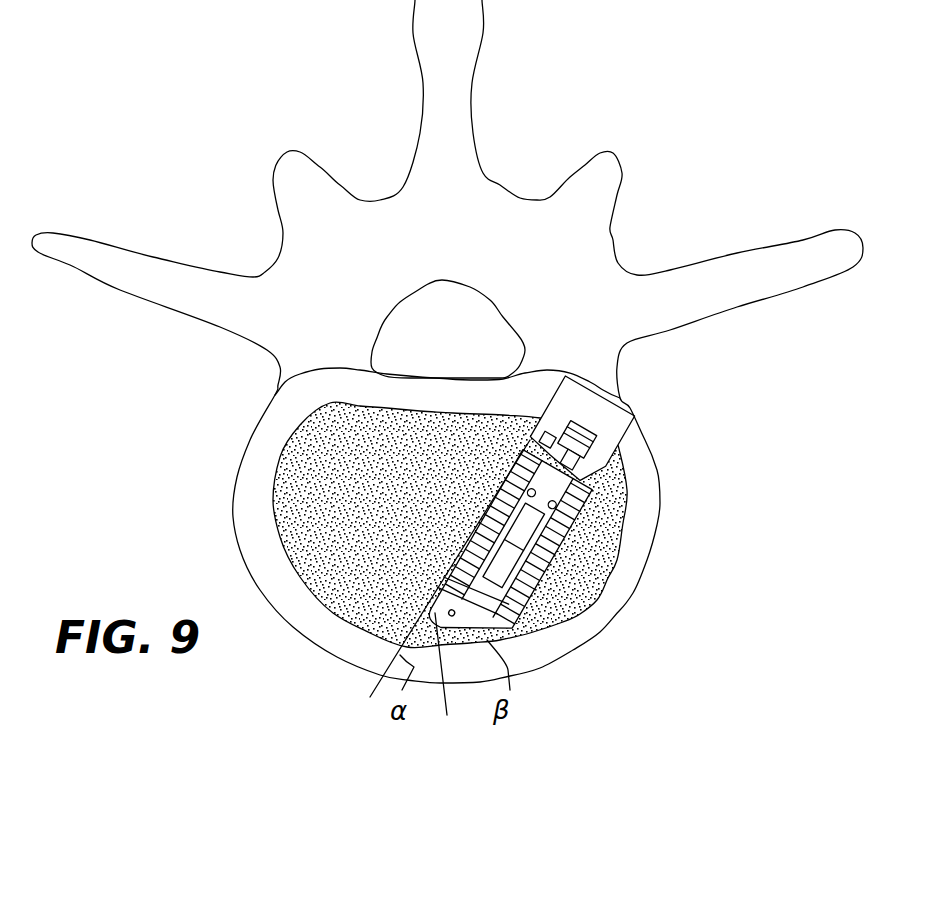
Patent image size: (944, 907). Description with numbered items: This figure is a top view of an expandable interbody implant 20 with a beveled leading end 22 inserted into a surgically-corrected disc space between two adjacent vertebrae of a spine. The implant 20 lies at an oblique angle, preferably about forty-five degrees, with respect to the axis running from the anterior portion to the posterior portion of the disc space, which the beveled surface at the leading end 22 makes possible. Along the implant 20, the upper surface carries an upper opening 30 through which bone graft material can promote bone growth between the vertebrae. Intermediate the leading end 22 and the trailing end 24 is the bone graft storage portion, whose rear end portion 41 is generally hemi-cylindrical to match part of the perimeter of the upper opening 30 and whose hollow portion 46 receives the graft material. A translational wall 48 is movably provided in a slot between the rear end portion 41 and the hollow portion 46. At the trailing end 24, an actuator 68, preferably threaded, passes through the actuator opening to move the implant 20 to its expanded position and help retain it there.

The expandable interbody implant 20 is at (660, 503).
The leading end 22 is at (467, 640).
The trailing end 24 is at (598, 468).
The upper opening 30 is at (553, 615).
The rear end portion 41 is at (556, 502).
The hollow portion 46 is at (515, 562).
The translational wall 48 is at (540, 527).
The actuator 68 is at (594, 424).